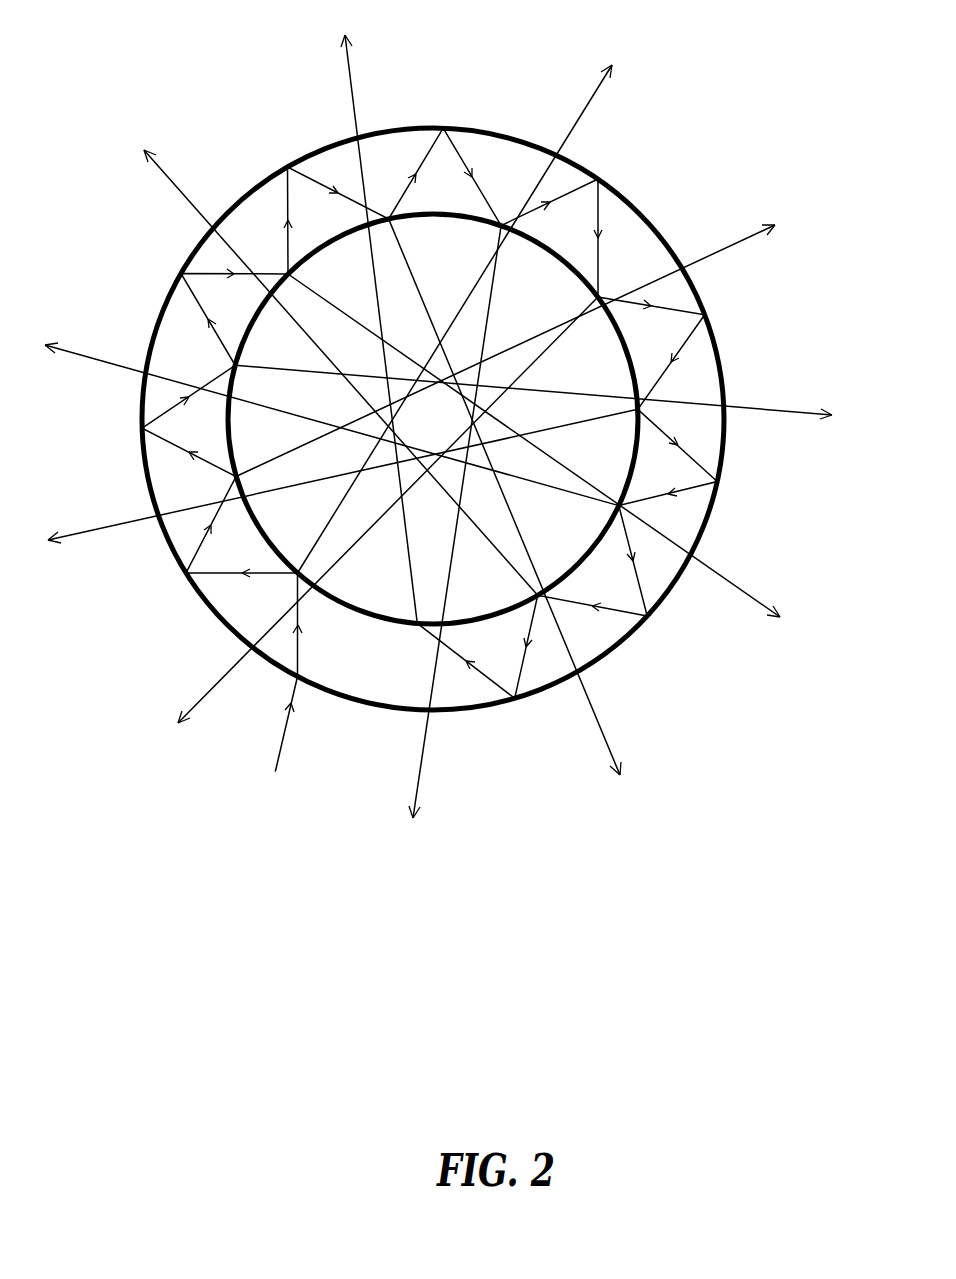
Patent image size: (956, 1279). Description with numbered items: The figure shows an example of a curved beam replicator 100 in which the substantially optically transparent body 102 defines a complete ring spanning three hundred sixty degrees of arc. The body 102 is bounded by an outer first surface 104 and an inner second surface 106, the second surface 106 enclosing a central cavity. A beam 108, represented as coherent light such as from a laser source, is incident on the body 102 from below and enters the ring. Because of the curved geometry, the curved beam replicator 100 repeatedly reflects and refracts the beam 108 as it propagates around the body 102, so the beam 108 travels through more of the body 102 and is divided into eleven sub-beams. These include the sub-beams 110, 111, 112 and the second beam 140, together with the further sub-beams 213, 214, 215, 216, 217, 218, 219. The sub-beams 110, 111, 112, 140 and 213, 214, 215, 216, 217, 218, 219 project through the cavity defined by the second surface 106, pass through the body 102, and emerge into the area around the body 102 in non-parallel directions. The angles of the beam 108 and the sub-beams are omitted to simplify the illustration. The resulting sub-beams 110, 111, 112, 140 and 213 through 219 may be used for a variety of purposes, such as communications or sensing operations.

The curved beam replicator 100 is at (226, 77).
The body 102 is at (273, 236).
The first surface 104 is at (186, 245).
The second surface 106 is at (312, 276).
The beam 108 is at (277, 757).
The sub-beam 110 is at (586, 113).
The sub-beam 111 is at (732, 246).
The sub-beam 112 is at (758, 406).
The second beam 140 is at (426, 754).
The sub-beam 213 is at (747, 590).
The sub-beam 214 is at (603, 726).
The sub-beam 215 is at (203, 694).
The sub-beam 216 is at (100, 517).
The sub-beam 217 is at (106, 367).
The sub-beam 218 is at (164, 165).
The sub-beam 219 is at (353, 78).